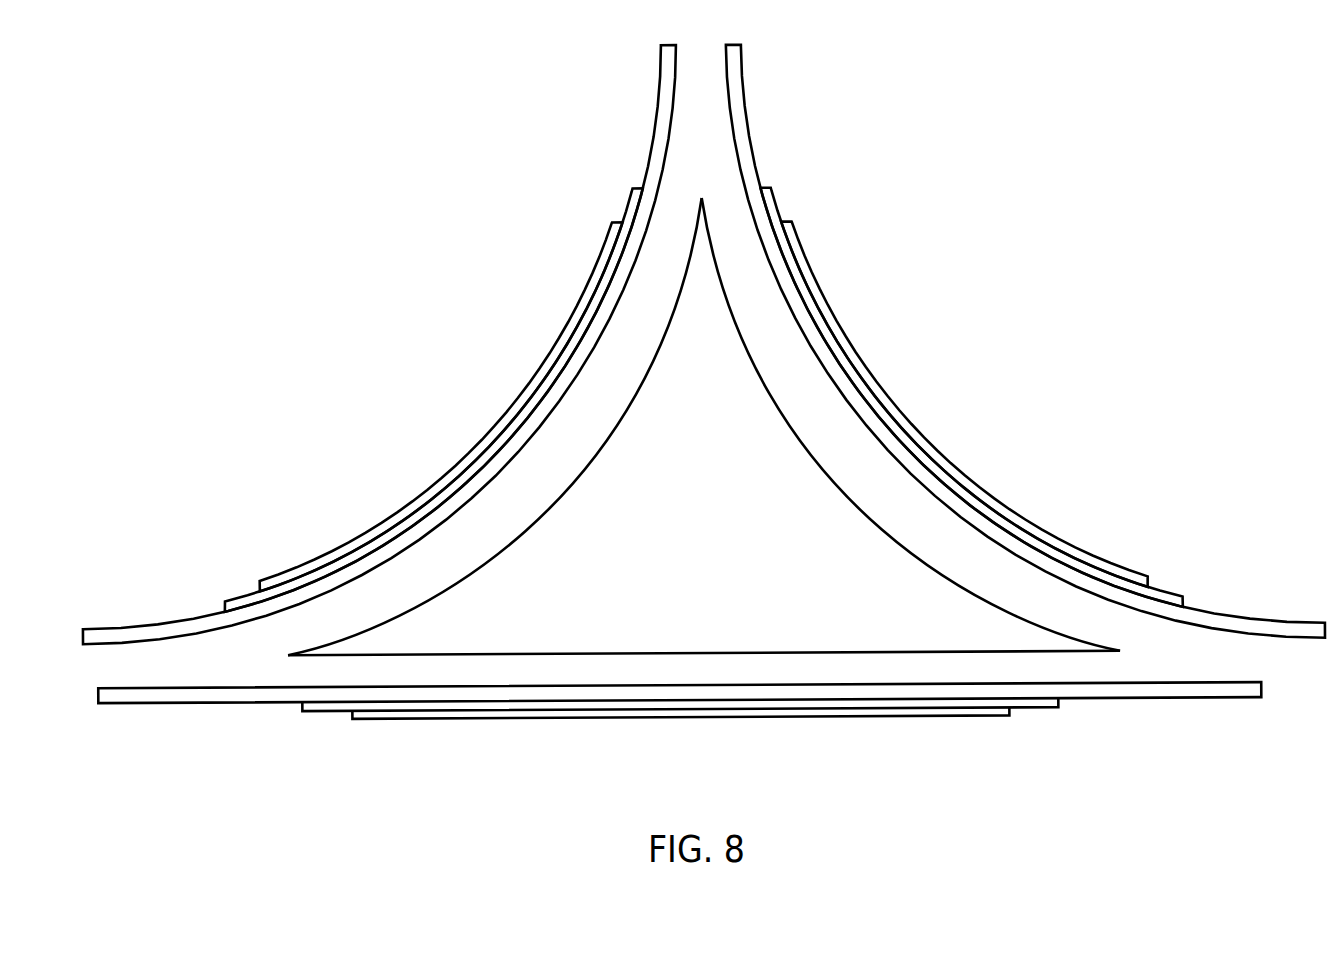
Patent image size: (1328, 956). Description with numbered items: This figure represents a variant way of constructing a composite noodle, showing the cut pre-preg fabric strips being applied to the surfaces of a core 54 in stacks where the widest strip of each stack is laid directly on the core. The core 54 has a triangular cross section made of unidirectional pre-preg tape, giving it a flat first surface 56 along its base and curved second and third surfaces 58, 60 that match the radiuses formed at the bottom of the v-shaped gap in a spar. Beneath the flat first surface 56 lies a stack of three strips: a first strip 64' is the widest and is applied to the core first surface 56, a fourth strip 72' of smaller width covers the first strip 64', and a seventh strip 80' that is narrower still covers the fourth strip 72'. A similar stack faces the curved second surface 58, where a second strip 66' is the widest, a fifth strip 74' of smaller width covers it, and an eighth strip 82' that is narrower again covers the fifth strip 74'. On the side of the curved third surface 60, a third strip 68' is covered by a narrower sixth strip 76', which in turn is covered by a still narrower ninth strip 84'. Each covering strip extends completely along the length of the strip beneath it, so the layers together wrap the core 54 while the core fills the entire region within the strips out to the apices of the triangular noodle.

The core 54 is at (625, 503).
The core first surface 56 is at (553, 655).
The core second surface 58 is at (379, 344).
The core third surface 60 is at (852, 503).
The first strip 64' is at (679, 750).
The second strip 66' is at (379, 344).
The third strip 68' is at (1025, 341).
The fourth pre-preg fabric strip 72' is at (680, 750).
The fifth pre-preg fabric strip 74' is at (434, 400).
The sixth pre-preg fabric strip 76' is at (1025, 397).
The seventh pre-preg fabric strip 80' is at (653, 741).
The eighth pre-preg fabric strip 82' is at (412, 406).
The ninth pre-preg fabric strip 84' is at (1020, 404).